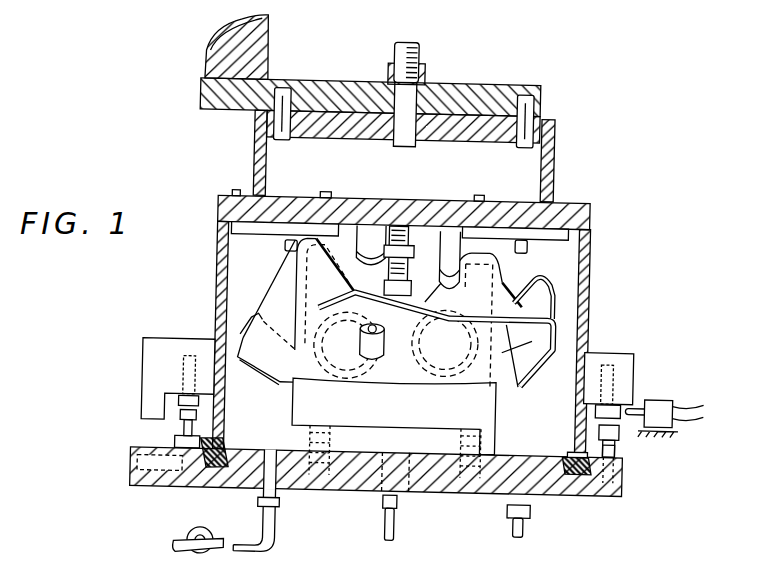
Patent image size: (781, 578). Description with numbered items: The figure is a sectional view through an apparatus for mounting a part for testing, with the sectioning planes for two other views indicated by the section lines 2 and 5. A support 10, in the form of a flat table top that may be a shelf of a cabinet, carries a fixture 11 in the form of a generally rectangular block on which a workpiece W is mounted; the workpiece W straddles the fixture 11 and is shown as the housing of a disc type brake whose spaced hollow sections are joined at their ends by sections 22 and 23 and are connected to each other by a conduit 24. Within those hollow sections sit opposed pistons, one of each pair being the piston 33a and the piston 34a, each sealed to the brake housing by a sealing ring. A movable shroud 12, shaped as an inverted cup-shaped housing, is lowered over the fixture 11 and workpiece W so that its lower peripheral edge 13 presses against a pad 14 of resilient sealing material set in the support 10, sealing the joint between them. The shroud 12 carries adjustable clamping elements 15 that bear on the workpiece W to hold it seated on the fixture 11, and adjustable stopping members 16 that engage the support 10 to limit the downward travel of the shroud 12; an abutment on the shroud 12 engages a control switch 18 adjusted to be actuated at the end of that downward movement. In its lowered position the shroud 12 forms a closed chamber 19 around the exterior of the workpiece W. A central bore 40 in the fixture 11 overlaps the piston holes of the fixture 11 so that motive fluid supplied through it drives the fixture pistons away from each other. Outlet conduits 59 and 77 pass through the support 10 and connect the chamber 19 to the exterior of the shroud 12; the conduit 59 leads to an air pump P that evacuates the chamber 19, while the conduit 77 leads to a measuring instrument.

The section line 2- 2 is at (238, 150).
The section line 5- 5 is at (351, 159).
The support 10 is at (606, 492).
The fixture 11 is at (499, 430).
The movable shroud 12 is at (565, 344).
The lower peripheral edge 13 is at (620, 447).
The pad 14 is at (396, 449).
The adjustable clamping elements 15 is at (413, 268).
The adjustable stopping members 16 is at (182, 432).
The control switch 18 is at (660, 402).
The closed chamber 19 is at (589, 285).
The section 22 is at (267, 310).
The section 23 is at (561, 371).
The conduit 24 is at (523, 370).
The piston 33a is at (317, 434).
The piston 34a is at (450, 436).
The central bore 40 is at (384, 496).
The outlet conduit 59 is at (284, 480).
The outlet conduit 77 is at (516, 477).
The workpiece W is at (506, 277).
The air pump P is at (210, 561).